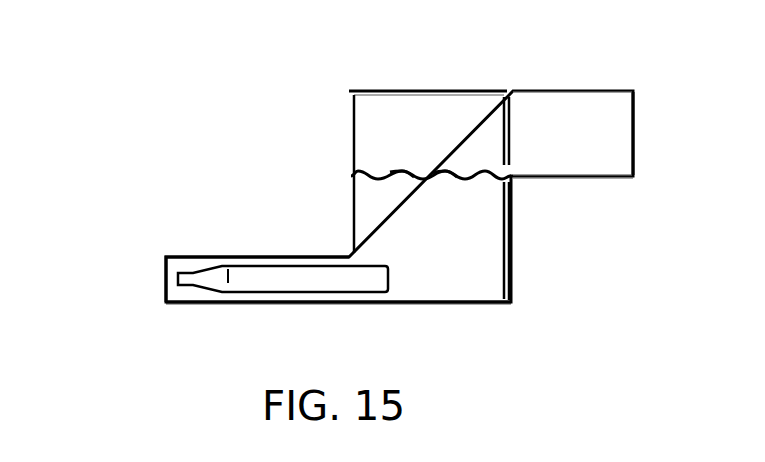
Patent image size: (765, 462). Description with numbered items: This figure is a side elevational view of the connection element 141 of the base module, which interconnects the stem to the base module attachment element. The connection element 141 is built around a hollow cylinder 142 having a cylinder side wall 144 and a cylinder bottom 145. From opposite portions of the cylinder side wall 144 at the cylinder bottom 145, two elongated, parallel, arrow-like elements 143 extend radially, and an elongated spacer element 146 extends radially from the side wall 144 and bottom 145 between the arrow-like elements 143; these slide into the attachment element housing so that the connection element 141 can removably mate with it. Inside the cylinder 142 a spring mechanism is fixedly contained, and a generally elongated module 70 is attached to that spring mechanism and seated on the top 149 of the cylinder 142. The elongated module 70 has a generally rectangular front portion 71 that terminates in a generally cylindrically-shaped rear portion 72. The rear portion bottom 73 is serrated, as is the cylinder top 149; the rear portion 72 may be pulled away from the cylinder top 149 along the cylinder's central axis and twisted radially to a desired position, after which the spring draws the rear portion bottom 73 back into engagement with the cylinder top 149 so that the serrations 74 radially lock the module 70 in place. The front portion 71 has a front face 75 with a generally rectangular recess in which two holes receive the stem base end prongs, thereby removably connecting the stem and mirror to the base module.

The connection element 141 is at (113, 175).
The hollow cylinder 142 is at (510, 262).
The arrow-like elements 143 is at (277, 283).
The cylinder side wall 144 is at (472, 245).
The cylinder bottom 145 is at (445, 302).
The spacer element 146 is at (180, 297).
The cylinder top 149 is at (385, 180).
The elongated module 70 is at (541, 90).
The front portion 71 is at (608, 105).
The rear portion 72 is at (363, 118).
The rear portion bottom 73 is at (447, 168).
The serrations 74 is at (408, 168).
The front face 75 is at (636, 130).